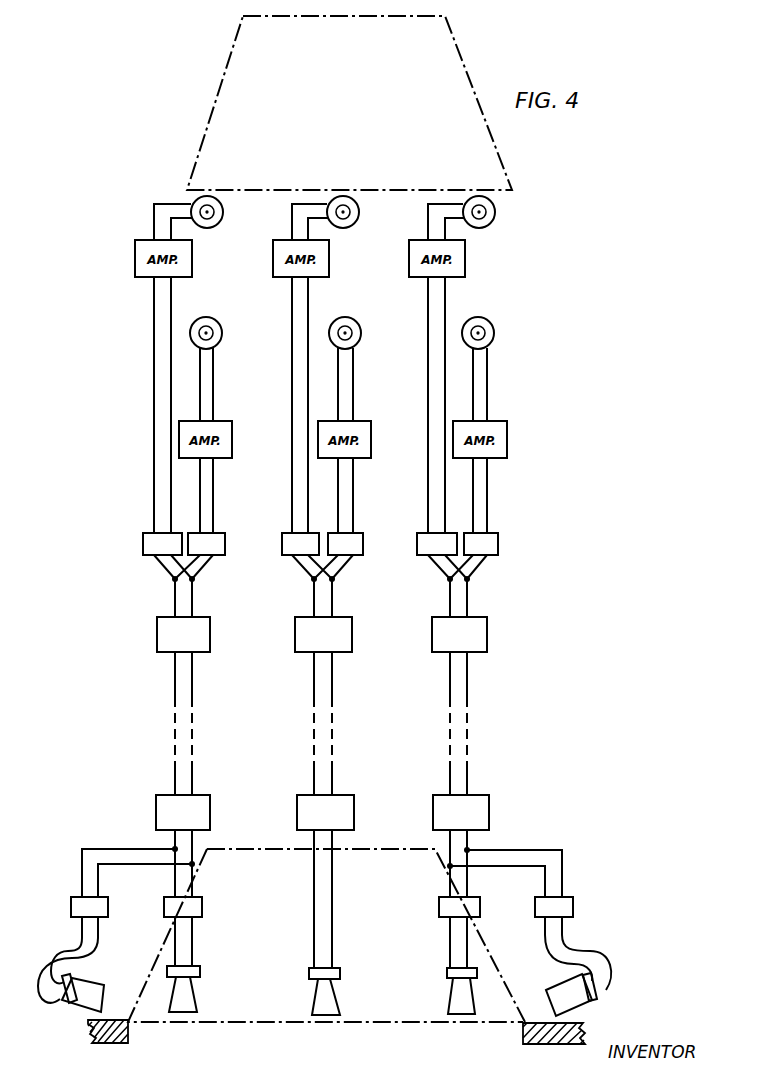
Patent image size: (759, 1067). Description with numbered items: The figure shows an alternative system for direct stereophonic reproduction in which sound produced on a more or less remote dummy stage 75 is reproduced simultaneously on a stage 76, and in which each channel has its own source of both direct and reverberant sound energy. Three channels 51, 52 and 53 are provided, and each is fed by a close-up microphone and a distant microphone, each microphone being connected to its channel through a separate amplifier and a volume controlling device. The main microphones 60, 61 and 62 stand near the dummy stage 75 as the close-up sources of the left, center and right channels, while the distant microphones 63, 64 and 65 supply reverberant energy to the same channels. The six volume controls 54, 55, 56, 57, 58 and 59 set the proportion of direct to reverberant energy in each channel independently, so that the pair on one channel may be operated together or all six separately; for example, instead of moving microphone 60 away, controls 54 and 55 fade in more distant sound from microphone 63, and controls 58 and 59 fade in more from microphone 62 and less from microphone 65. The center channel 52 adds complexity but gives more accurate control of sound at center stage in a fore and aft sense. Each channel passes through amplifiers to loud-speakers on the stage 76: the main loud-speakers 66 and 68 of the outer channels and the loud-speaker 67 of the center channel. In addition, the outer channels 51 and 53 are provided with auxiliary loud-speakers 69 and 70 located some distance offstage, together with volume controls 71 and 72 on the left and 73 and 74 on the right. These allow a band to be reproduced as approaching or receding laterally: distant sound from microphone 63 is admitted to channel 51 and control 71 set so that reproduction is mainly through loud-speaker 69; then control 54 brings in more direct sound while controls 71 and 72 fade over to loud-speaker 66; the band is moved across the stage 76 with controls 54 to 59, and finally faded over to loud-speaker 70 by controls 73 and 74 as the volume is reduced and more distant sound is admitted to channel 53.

The channel 51 is at (178, 673).
The channel 52 is at (317, 673).
The channel 53 is at (455, 673).
The volume control 54 is at (145, 533).
The volume control 55 is at (222, 533).
The volume control 56 is at (286, 533).
The volume control 57 is at (360, 533).
The volume control 58 is at (422, 533).
The volume control 59 is at (496, 533).
The main microphone 60 is at (223, 212).
The main microphone 61 is at (359, 212).
The main microphone 62 is at (495, 212).
The distant microphone 63 is at (222, 333).
The distant microphone 64 is at (361, 333).
The distant microphone 65 is at (494, 333).
The main loud-speaker 66 is at (199, 1008).
The loud-speaker 67 is at (341, 1008).
The main loud-speaker 68 is at (477, 1010).
The auxiliary loud-speaker 69 is at (85, 1008).
The auxiliary loud-speaker 70 is at (598, 1002).
The volume control 71 is at (110, 907).
The volume control 72 is at (204, 907).
The volume control 73 is at (438, 907).
The volume control 74 is at (535, 907).
The dummy stage 75 is at (349, 103).
The stage 76 is at (326, 935).